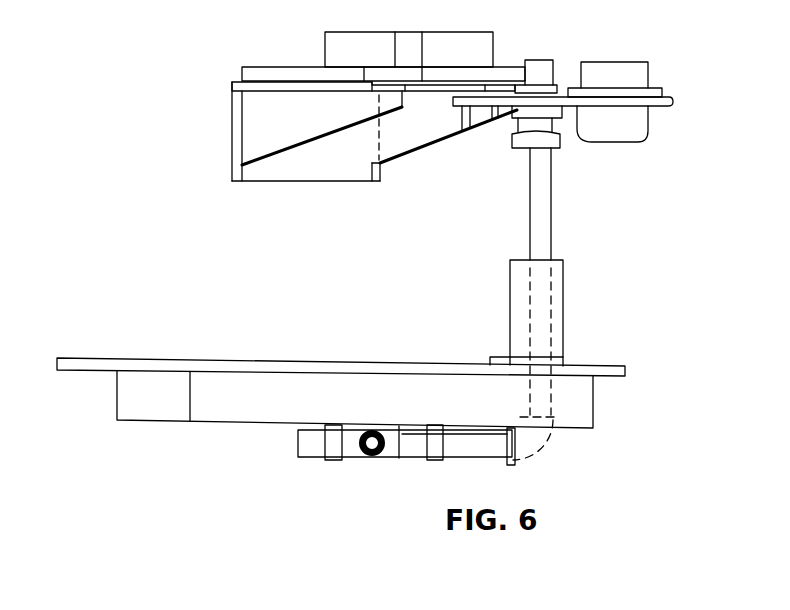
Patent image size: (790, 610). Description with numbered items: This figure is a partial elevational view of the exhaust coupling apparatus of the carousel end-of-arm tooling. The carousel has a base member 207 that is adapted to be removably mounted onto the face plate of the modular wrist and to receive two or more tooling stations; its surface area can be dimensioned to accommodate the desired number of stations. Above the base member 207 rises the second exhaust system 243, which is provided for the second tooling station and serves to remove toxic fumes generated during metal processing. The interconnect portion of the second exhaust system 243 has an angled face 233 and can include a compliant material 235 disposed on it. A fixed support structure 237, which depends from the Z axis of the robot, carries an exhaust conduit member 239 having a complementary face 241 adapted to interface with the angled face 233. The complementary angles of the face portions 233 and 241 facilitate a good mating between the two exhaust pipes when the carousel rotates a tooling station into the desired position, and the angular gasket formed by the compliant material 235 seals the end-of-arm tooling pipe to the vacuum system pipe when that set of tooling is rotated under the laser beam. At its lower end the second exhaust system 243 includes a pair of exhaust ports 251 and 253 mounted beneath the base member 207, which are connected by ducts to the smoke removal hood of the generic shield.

The base member 207 is at (580, 403).
The angled face 233 is at (560, 136).
The compliant material 235 is at (523, 148).
The fixed support structure 237 is at (668, 108).
The exhaust conduit member 239 is at (547, 92).
The complementary face 241 is at (521, 111).
The second exhaust system 243 is at (625, 310).
The exhaust port 251 is at (373, 456).
The exhaust port 253 is at (303, 442).